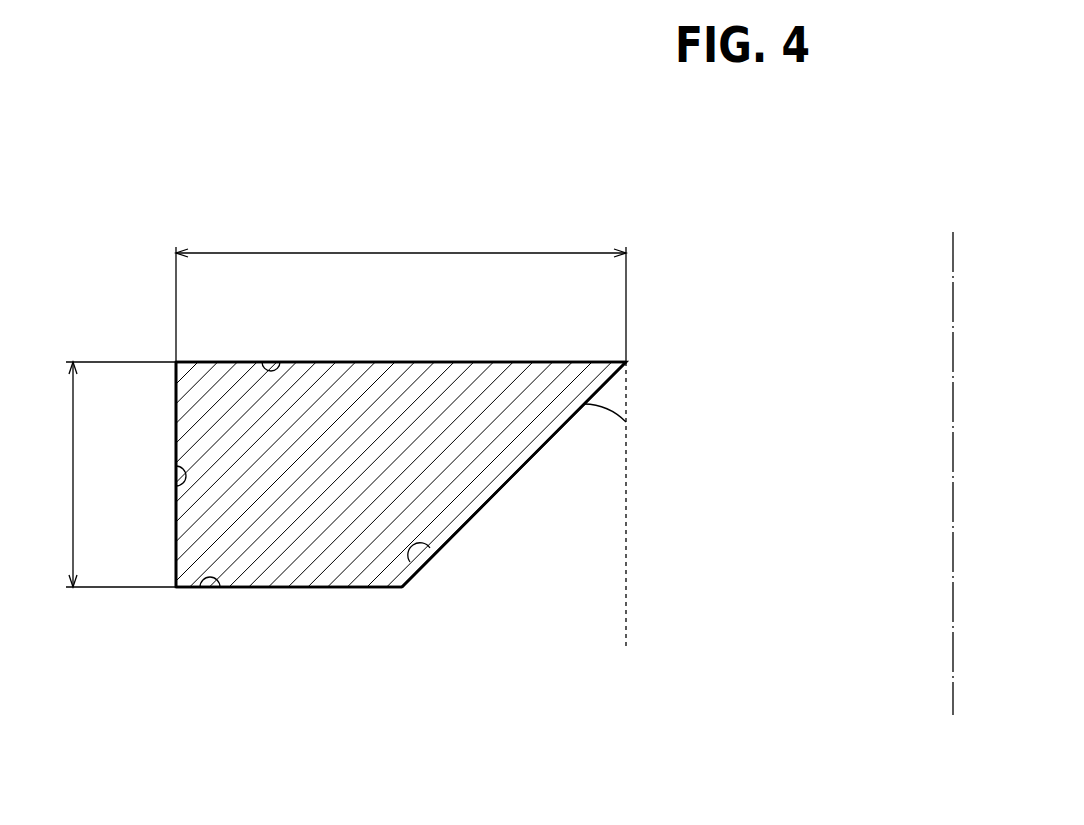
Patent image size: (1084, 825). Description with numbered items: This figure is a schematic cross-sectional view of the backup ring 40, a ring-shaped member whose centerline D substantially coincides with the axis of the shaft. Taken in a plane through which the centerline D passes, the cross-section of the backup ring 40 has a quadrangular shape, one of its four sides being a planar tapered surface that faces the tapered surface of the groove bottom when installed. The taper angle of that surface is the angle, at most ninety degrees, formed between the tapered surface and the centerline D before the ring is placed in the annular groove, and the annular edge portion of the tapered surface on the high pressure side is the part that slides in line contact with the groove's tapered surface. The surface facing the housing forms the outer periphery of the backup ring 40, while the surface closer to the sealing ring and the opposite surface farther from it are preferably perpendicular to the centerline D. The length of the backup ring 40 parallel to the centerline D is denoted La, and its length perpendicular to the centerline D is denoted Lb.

The backup ring 40 is at (285, 587).
The length of the backup ring perpendicular to the centerline Lb is at (401, 292).
The length of the backup ring parallel to the centerline La is at (107, 474).
The centerline of the backup ring D is at (953, 459).